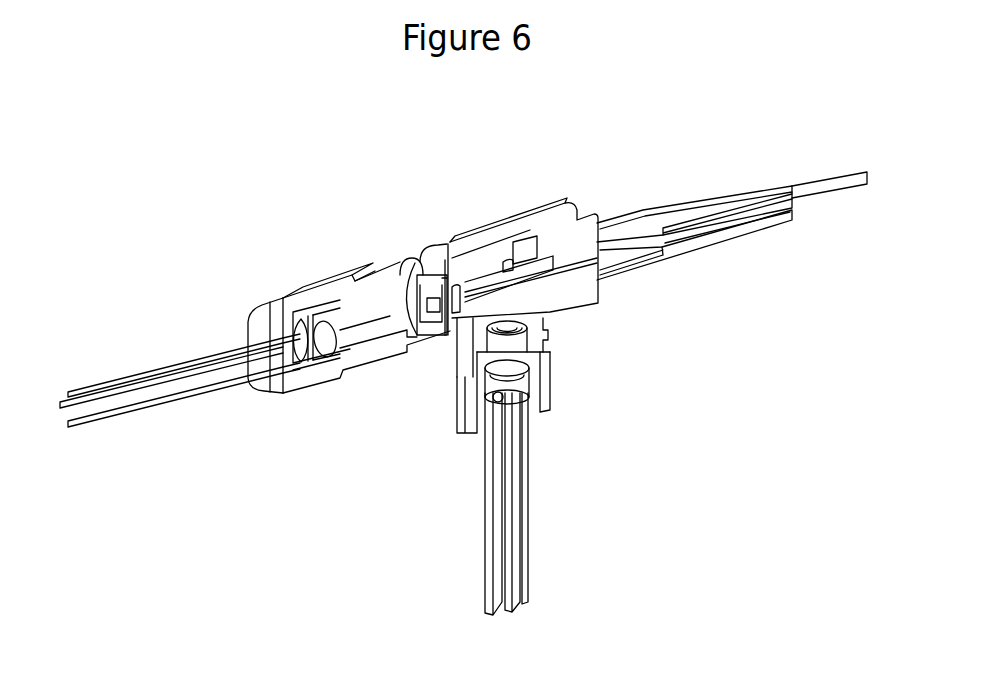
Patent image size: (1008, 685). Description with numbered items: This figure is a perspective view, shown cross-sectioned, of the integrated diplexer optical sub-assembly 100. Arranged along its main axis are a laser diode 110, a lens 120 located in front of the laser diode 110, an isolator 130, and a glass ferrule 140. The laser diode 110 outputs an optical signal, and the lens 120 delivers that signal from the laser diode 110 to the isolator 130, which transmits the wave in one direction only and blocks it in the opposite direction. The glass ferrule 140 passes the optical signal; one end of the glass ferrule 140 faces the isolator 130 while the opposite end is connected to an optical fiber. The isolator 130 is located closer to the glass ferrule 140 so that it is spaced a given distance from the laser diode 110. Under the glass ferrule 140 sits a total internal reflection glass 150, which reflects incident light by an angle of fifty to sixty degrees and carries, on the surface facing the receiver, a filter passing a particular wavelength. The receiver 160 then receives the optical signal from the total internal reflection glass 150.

The integrated diplexer optical sub-assembly 100 is at (552, 170).
The laser diode 110 is at (290, 327).
The lens 120 is at (316, 322).
The isolator 130 is at (421, 277).
The glass ferrule 140 is at (489, 288).
The total internal reflection glass 150 is at (472, 318).
The receiver 160 is at (527, 382).